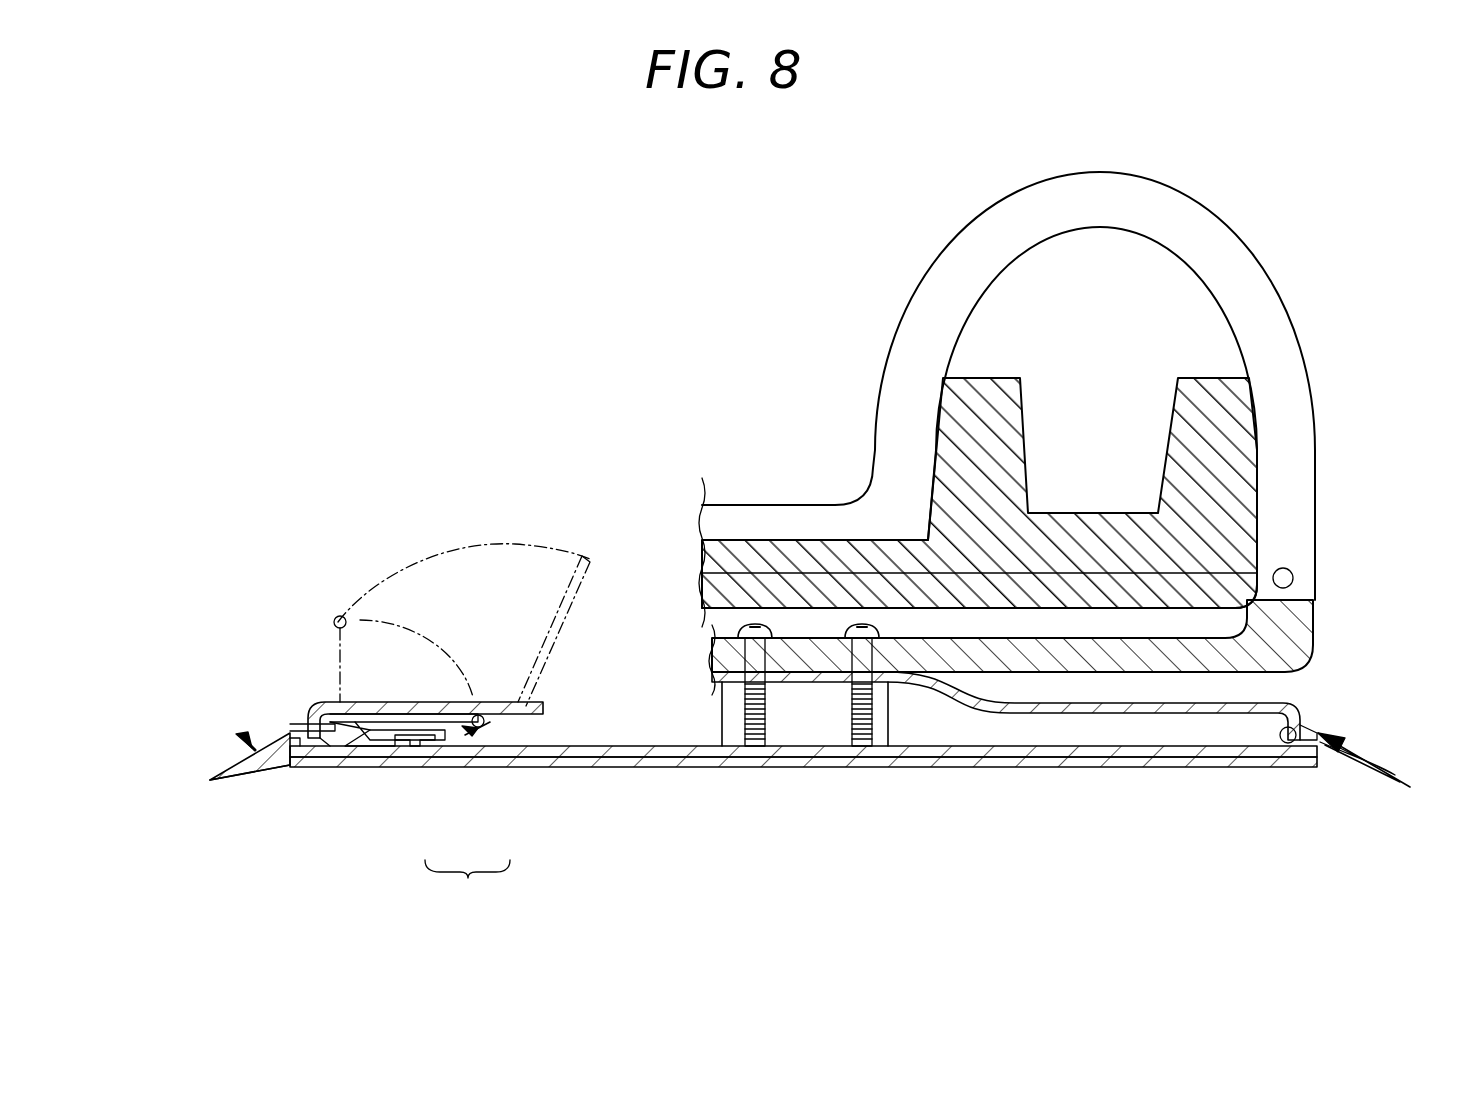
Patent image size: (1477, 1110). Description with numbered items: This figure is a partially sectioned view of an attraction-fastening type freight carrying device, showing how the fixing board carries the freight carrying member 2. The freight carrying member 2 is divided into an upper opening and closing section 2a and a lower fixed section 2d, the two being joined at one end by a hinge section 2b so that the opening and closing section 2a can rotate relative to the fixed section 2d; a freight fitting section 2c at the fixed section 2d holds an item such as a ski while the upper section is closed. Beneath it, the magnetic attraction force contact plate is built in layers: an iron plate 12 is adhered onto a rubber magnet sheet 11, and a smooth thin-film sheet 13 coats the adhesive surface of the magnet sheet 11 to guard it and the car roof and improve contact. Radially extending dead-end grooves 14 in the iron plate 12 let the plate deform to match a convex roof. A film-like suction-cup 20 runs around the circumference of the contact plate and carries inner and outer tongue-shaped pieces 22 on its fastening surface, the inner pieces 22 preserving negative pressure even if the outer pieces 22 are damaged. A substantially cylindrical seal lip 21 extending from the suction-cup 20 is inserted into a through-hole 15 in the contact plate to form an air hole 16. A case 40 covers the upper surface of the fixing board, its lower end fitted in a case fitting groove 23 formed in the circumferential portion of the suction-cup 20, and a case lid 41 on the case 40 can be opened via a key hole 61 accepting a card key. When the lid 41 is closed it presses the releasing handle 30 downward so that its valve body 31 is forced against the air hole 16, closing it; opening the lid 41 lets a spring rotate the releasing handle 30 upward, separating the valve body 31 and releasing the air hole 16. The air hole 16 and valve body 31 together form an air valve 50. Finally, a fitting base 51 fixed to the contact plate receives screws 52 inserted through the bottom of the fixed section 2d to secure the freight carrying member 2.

The freight carrying member 2 is at (1258, 212).
The opening and closing section 2a is at (1290, 375).
The hinge section 2b is at (1295, 580).
The freight fitting section 2c is at (1222, 492).
The fixed section 2d is at (1290, 642).
The rubber magnet sheet 11 is at (685, 770).
The iron plate 12 is at (663, 740).
The thin-film sheet 13 is at (832, 760).
The grooves 14 is at (545, 737).
The through-hole 15 is at (418, 770).
The air hole 16 is at (467, 883).
The film-like suction-cup 20 is at (1365, 752).
The seal lip 21 is at (470, 770).
The tongue-shaped pieces 22 is at (205, 782).
The case fitting groove 23 is at (1315, 730).
The releasing handle 30 is at (440, 714).
The valve body 31 is at (385, 770).
The case 40 is at (545, 697).
The case lid 41 is at (562, 636).
The air valve 50 is at (490, 750).
The fitting base 51 is at (808, 728).
The screws 52 is at (745, 772).
The key hole 61 is at (292, 735).